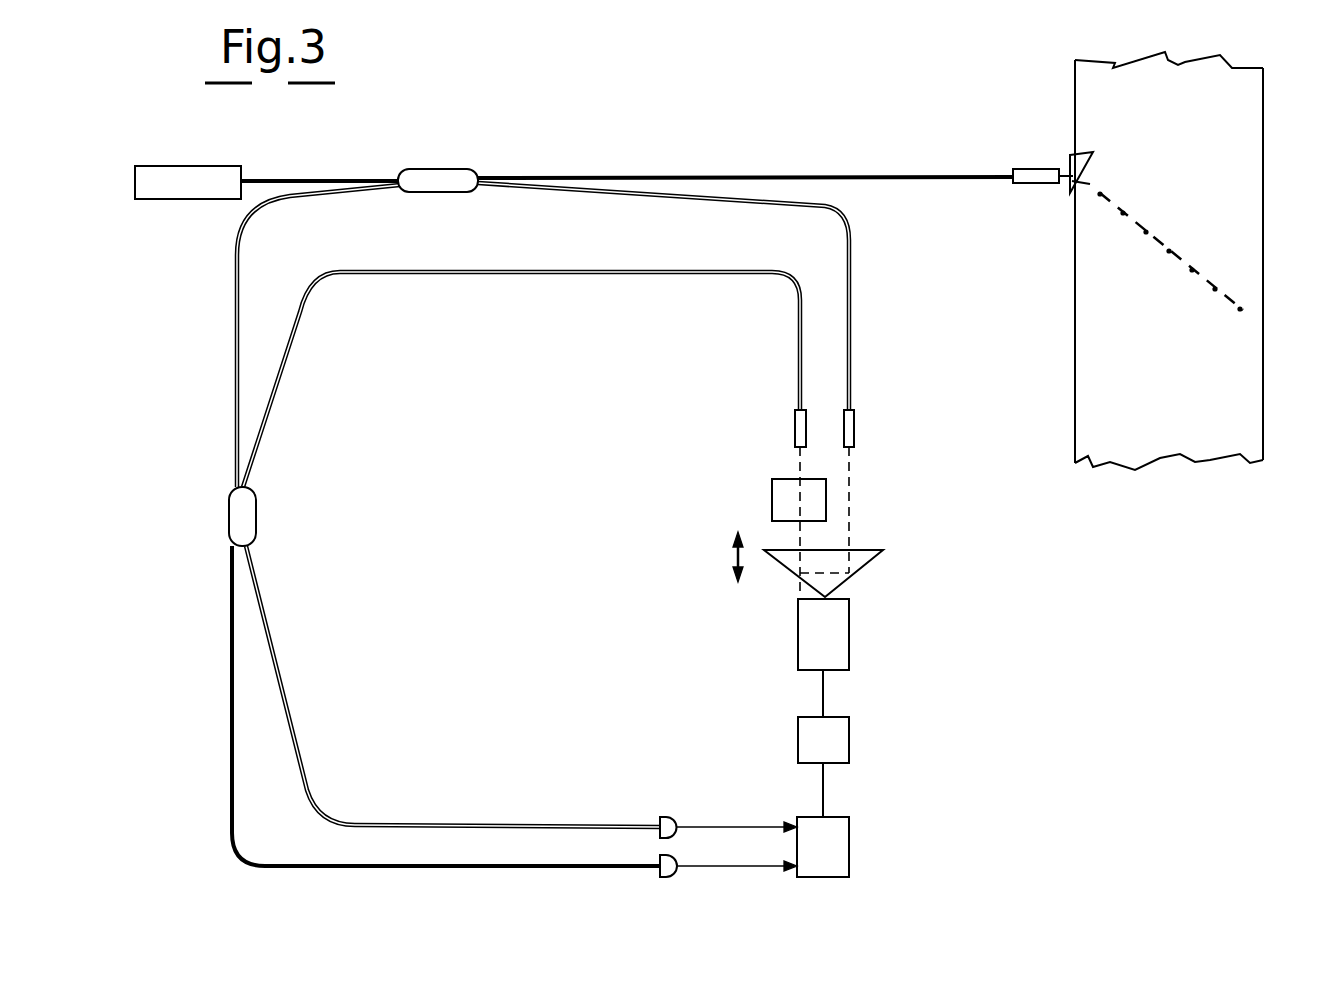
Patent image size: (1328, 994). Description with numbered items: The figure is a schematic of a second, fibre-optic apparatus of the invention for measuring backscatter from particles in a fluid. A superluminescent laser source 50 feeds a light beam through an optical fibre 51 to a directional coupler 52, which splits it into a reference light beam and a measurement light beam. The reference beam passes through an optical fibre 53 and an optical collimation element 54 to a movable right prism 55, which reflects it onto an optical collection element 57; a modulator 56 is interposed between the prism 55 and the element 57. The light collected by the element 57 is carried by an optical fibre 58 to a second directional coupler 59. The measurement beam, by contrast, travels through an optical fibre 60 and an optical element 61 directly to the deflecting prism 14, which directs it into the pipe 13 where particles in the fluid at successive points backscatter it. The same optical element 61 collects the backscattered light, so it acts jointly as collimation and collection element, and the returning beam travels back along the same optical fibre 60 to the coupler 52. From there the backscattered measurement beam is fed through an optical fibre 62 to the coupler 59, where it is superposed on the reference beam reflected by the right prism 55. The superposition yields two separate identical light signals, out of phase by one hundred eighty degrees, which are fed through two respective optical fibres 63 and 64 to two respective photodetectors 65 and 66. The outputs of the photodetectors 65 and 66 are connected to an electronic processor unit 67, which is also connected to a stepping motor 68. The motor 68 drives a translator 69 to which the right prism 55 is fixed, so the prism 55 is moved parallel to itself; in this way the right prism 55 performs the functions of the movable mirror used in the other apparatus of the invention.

The pipe 13 is at (1258, 197).
The deflecting prism 14 is at (1073, 155).
The superluminescent laser source 50 is at (186, 172).
The optical fibre 51 is at (302, 178).
The directional coupler 52 is at (440, 177).
The optical fibre 53 is at (830, 207).
The optical collimation element 54 is at (858, 428).
The movable right prism 55 is at (865, 552).
The modulator 56 is at (778, 500).
The optical collection element 57 is at (796, 428).
The optical fibre 58 is at (430, 274).
The directional coupler 59 is at (248, 511).
The optical fibre 60 is at (718, 176).
The optical element 61 is at (1028, 186).
The optical fibre 62 is at (236, 357).
The optical fibre 63 is at (305, 760).
The optical fibre 64 is at (240, 856).
The photodetector 65 is at (672, 820).
The photodetector 66 is at (676, 876).
The electronic processor unit 67 is at (838, 856).
The stepping motor 68 is at (838, 741).
The translator 69 is at (838, 633).